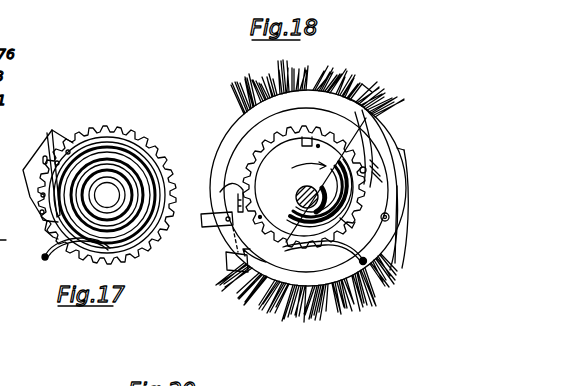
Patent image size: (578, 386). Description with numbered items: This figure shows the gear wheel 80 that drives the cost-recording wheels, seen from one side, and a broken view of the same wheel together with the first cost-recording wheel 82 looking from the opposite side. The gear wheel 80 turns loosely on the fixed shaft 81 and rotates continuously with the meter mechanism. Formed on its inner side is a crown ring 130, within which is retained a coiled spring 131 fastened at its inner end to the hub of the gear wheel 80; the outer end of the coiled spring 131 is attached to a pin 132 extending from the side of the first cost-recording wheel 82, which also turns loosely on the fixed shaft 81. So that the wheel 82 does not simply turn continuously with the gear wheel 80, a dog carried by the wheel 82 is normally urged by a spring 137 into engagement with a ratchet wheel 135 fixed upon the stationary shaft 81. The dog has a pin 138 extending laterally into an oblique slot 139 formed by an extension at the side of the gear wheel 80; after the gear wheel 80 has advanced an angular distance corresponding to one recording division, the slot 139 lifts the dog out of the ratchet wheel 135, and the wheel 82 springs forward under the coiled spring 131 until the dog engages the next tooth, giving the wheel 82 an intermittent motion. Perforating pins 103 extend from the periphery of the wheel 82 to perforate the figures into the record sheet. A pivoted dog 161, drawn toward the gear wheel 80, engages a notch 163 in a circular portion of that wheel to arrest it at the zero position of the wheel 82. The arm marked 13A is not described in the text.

In FIG. 18, the arm 13A is at (401, 241).
In FIG. 17, the gear wheel 80 is at (157, 152).
In FIG. 18, the gear wheel 80 is at (267, 141).
In FIG. 18, the fixed shaft 81 is at (297, 193).
In FIG. 18, the first cost-recording wheel 82 is at (298, 297).
In FIG. 18, the perforating pins 103 is at (364, 84).
In FIG. 17, the crown ring 130 is at (152, 242).
In FIG. 18, the crown ring 130 is at (276, 260).
In FIG. 17, the coiled spring 131 is at (113, 152).
In FIG. 18, the coiled spring 131 is at (352, 249).
In FIG. 17, the pin 132 is at (43, 259).
In FIG. 18, the pin 132 is at (363, 265).
In FIG. 18, the ratchet wheel 135 is at (349, 224).
In FIG. 18, the spring 137 is at (394, 186).
In FIG. 18, the pin 138 is at (368, 132).
In FIG. 17, the oblique slot 139 is at (50, 131).
In FIG. 18, the oblique slot 139 is at (376, 157).
In FIG. 18, the dog 161 is at (233, 258).
In FIG. 18, the notch 163 is at (312, 141).